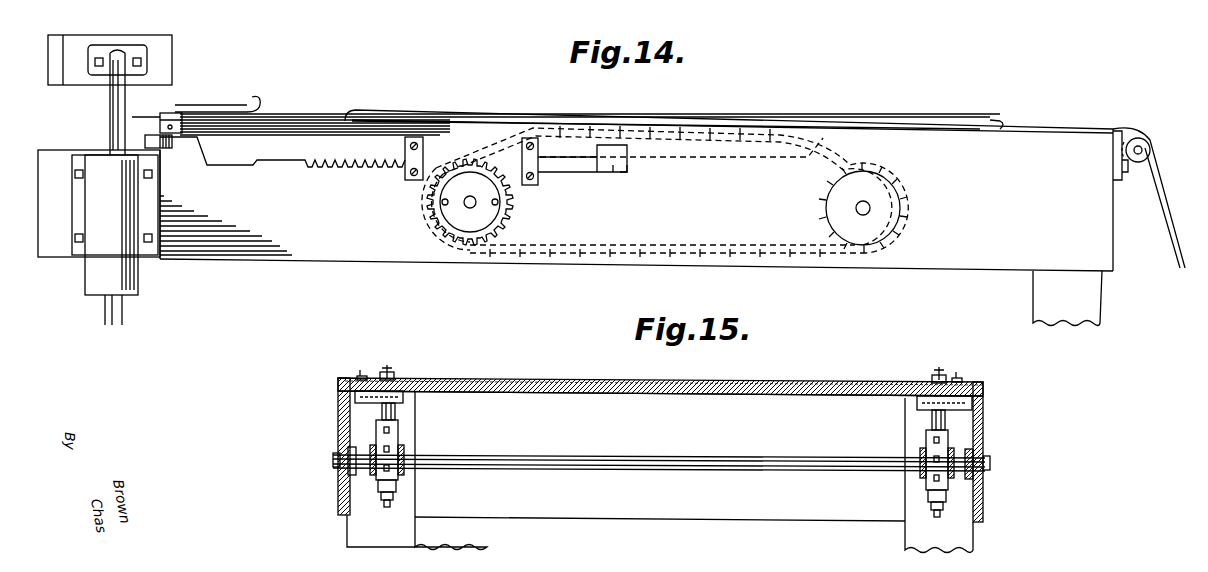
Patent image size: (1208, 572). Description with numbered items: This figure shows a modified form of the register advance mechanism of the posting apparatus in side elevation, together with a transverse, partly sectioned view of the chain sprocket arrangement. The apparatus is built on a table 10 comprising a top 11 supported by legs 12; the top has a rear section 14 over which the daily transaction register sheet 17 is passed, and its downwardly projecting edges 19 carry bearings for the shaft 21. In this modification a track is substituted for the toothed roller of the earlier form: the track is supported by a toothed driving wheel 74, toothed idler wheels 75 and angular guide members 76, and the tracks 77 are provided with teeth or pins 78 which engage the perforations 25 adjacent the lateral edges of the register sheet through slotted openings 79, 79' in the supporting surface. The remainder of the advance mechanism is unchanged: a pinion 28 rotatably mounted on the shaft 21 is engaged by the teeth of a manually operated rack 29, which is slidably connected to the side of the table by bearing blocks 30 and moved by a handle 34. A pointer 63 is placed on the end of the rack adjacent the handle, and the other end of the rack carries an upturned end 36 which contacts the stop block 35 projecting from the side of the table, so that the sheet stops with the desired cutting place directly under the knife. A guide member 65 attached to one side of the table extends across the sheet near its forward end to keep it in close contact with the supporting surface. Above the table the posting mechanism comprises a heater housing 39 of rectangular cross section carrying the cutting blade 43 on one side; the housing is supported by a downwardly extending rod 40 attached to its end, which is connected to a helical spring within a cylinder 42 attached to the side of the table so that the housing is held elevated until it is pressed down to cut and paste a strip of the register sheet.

In FIG. 14, the table 10 is at (943, 277).
In FIG. 15, the table 10 is at (846, 532).
In FIG. 15, the top 11 is at (640, 394).
In FIG. 14, the legs 12 is at (1050, 306).
In FIG. 14, the rear section 14 is at (77, 142).
In FIG. 14, the daily transaction register sheet 17 is at (1017, 129).
In FIG. 15, the daily transaction register sheet 17 is at (735, 380).
In FIG. 14, the downwardly projecting edges 19 is at (996, 266).
In FIG. 14, the shaft 21 is at (468, 210).
In FIG. 15, the perforations 25 is at (396, 376).
In FIG. 14, the pinion 28 is at (440, 228).
In FIG. 14, the rack 29 is at (342, 172).
In FIG. 14, the bearing blocks 30 is at (403, 178).
In FIG. 14, the handle 34 is at (170, 150).
In FIG. 14, the stop block 35 is at (607, 160).
In FIG. 14, the upturned end 36 is at (628, 160).
In FIG. 14, the heater housing 39 is at (155, 45).
In FIG. 14, the rod 40 is at (110, 110).
In FIG. 14, the cylinder 42 is at (133, 225).
In FIG. 14, the cutting blade 43 is at (168, 70).
In FIG. 14, the pointer 63 is at (170, 113).
In FIG. 14, the guide member 65 is at (226, 97).
In FIG. 14, the toothed driving wheel 74 is at (523, 230).
In FIG. 14, the toothed idler wheels 75 is at (893, 208).
In FIG. 15, the toothed idler wheels 75 is at (376, 437).
In FIG. 14, the angular guide members 76 is at (770, 155).
In FIG. 15, the angular guide members 76 is at (423, 380).
In FIG. 14, the tracks 77 is at (868, 163).
In FIG. 15, the tracks 77 is at (395, 415).
In FIG. 14, the teeth or pins 78 is at (762, 254).
In FIG. 15, the teeth or pins 78 is at (388, 376).
In FIG. 15, the slotted opening 79 is at (1001, 450).
In FIG. 15, the slotted opening 79' is at (317, 444).